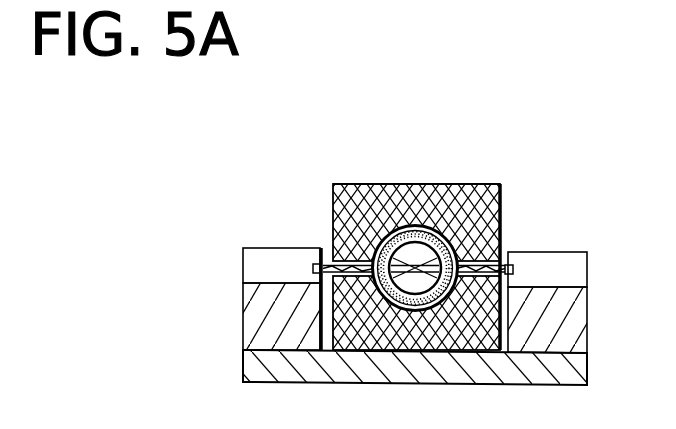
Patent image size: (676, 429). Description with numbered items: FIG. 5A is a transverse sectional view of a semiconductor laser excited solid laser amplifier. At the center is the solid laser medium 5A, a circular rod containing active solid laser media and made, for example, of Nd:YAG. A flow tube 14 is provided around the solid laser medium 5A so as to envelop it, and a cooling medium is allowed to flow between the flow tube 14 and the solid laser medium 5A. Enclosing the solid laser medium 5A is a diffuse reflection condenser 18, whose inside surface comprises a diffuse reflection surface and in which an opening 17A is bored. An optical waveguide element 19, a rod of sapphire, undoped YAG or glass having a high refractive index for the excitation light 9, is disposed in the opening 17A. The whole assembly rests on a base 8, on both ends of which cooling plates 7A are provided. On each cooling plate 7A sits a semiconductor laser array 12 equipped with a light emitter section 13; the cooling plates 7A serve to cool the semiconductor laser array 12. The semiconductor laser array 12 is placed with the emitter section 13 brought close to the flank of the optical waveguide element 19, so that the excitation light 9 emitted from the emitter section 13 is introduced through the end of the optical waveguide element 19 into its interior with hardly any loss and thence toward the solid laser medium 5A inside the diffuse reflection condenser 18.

The solid laser medium 5A is at (414, 224).
The cooling plate 7A is at (262, 323).
The base 8 is at (418, 363).
The excitation light 9 is at (325, 267).
The semiconductor laser array 12 is at (268, 267).
The light emitter section 13 is at (315, 268).
The flow tube 14 is at (443, 222).
The opening 17A is at (345, 197).
The diffuse reflection condenser 18 is at (486, 184).
The optical waveguide element 19 is at (506, 264).